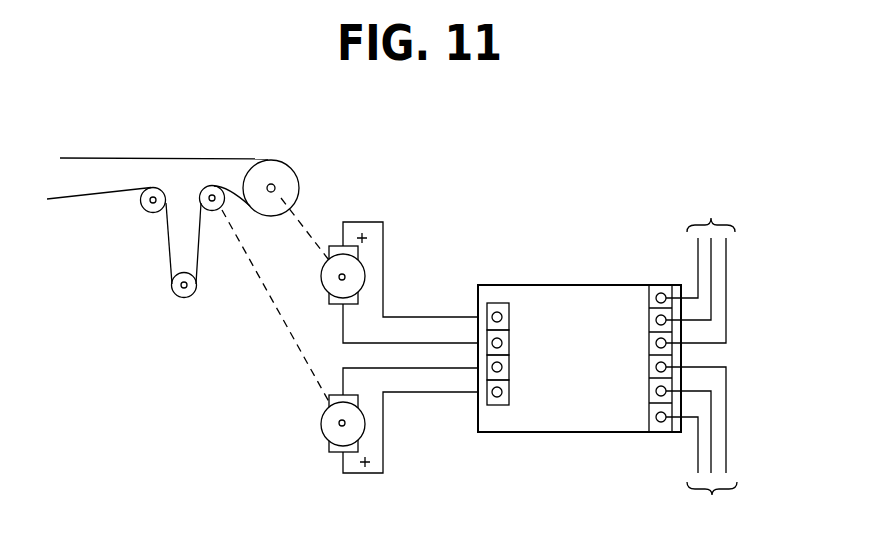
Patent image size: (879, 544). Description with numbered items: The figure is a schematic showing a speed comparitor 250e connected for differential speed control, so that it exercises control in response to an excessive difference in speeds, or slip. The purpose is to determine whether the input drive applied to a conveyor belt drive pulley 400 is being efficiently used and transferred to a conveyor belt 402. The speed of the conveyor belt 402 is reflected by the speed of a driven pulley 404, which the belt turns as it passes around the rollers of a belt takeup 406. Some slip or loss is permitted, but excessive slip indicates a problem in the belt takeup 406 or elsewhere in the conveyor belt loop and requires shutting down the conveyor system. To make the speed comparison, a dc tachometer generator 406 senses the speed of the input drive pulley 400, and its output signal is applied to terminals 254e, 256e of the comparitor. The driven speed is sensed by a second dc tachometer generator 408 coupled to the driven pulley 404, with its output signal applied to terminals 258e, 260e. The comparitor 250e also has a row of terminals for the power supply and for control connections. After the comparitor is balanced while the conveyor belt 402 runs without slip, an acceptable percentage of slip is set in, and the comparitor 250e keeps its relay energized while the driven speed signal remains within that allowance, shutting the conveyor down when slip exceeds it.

The speed comparitor 250e is at (589, 260).
The terminal 254e is at (507, 317).
The terminal 256e is at (507, 343).
The terminal 258e is at (507, 367).
The terminal 260e is at (507, 392).
The conveyor belt drive pulley 400 is at (288, 170).
The conveyor belt 402 is at (182, 157).
The driven pulley 404 is at (218, 209).
The belt takeup / dc tachometer generator 406 is at (140, 255).
The dc tachometer generator 408 is at (323, 433).